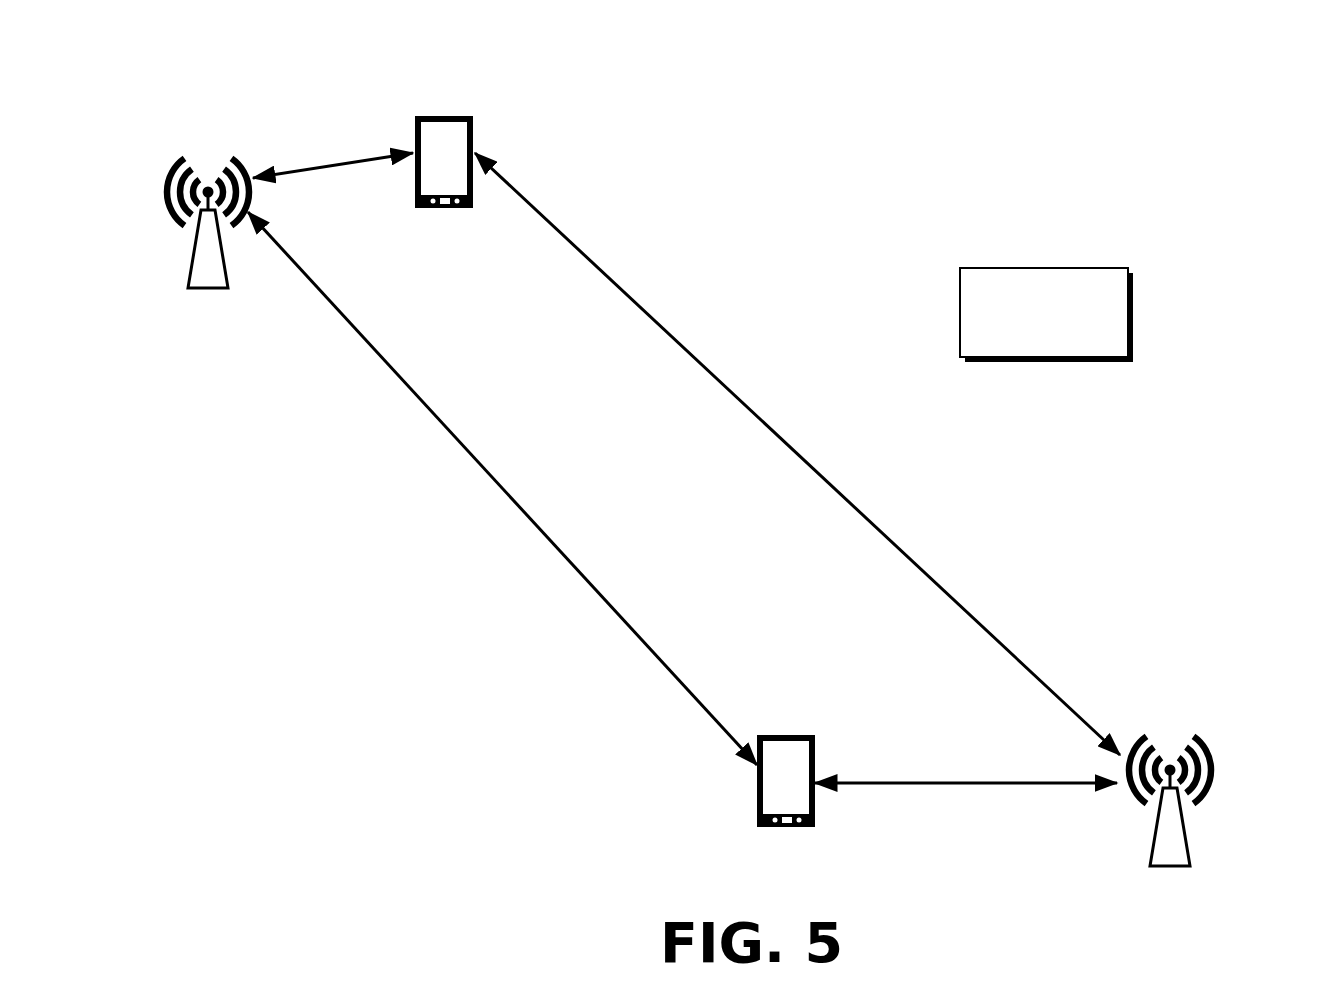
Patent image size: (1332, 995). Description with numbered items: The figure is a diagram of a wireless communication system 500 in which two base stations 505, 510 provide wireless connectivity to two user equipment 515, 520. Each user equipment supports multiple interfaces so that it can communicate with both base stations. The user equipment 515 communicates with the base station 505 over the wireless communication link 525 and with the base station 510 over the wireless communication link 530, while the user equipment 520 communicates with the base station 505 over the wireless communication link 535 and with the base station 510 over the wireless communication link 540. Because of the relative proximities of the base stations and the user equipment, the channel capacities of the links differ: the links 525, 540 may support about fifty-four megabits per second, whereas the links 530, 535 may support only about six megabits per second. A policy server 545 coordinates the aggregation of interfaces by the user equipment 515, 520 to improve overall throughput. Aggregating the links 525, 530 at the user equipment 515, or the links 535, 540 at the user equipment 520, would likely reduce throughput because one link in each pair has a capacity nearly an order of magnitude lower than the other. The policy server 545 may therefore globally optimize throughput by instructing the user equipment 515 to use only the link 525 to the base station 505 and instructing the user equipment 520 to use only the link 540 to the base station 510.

The wireless communication system 500 is at (1240, 98).
The base station 505 is at (208, 290).
The base station 510 is at (1168, 870).
The user equipment 515 is at (440, 212).
The user equipment 520 is at (785, 828).
The wireless communication link 525 is at (367, 157).
The wireless communication link 530 is at (702, 367).
The wireless communication link 535 is at (503, 498).
The wireless communication link 540 is at (977, 780).
The policy server 545 is at (1045, 265).